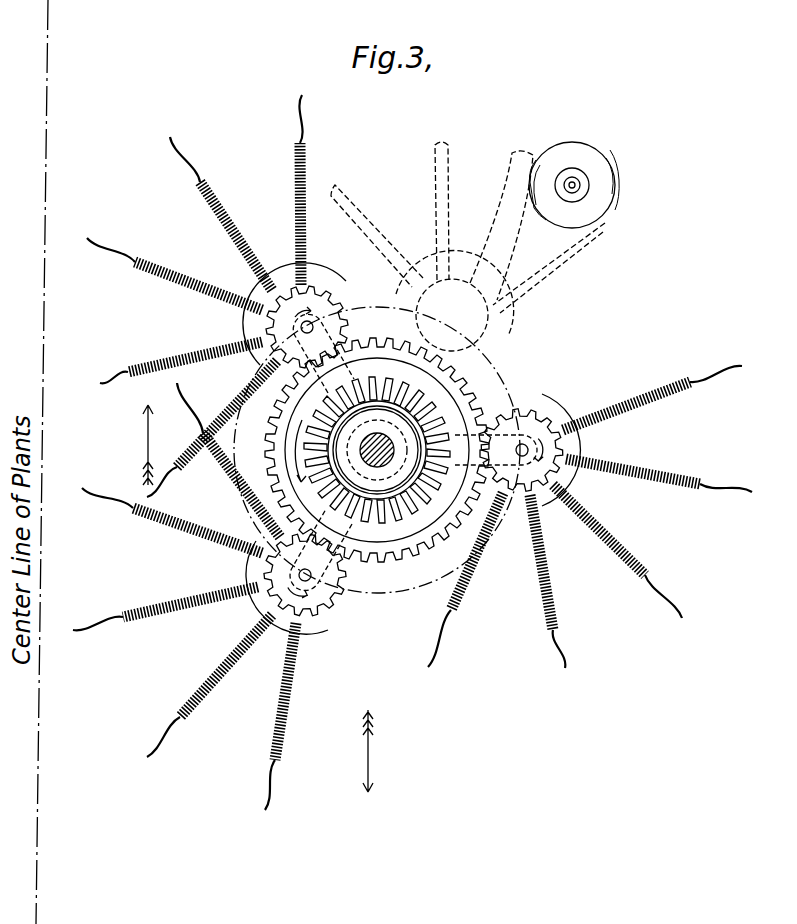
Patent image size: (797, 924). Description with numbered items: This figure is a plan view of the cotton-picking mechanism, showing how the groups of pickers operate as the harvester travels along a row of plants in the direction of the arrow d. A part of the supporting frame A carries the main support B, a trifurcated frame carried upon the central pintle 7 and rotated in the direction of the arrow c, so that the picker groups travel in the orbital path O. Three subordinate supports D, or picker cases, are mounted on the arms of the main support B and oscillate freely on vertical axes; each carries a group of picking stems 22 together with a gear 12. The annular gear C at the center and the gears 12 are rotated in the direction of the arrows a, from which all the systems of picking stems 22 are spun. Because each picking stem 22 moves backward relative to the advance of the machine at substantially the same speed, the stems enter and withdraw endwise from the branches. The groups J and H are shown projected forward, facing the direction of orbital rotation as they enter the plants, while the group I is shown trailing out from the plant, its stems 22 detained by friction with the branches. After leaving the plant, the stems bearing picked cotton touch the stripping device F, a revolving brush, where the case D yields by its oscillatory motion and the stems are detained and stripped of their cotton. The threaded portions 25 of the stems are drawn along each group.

The picking stem 22 is at (412, 452).
The threaded rods 25 is at (411, 451).
The gear 12 is at (336, 303).
The pintle 7 is at (385, 462).
The path O is at (379, 460).
The supporting frame A is at (375, 447).
The main support B is at (496, 402).
The annular gear C is at (371, 450).
The subordinate support D is at (402, 448).
The stripping device F is at (590, 164).
The group of pickers H is at (258, 587).
The group of pickers I is at (264, 314).
The group of pickers J is at (520, 516).
The arrow a is at (295, 451).
The arrow c is at (152, 445).
The arrow d is at (373, 751).